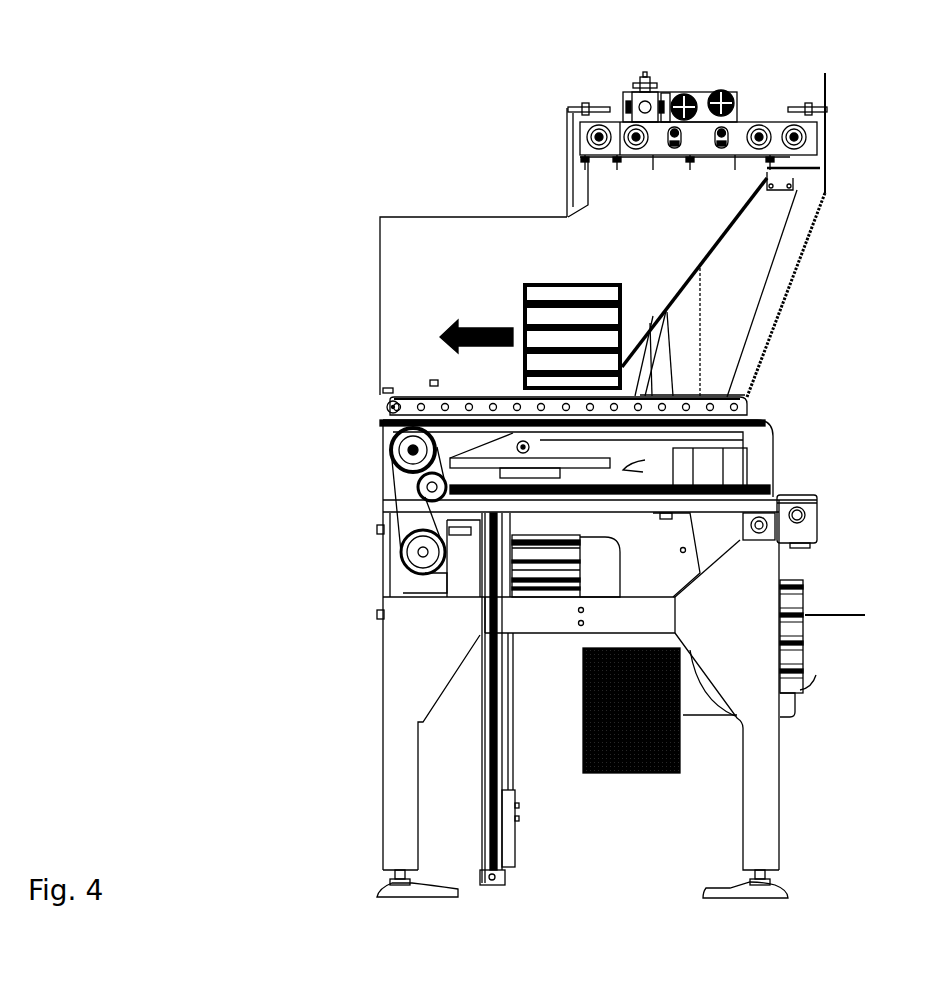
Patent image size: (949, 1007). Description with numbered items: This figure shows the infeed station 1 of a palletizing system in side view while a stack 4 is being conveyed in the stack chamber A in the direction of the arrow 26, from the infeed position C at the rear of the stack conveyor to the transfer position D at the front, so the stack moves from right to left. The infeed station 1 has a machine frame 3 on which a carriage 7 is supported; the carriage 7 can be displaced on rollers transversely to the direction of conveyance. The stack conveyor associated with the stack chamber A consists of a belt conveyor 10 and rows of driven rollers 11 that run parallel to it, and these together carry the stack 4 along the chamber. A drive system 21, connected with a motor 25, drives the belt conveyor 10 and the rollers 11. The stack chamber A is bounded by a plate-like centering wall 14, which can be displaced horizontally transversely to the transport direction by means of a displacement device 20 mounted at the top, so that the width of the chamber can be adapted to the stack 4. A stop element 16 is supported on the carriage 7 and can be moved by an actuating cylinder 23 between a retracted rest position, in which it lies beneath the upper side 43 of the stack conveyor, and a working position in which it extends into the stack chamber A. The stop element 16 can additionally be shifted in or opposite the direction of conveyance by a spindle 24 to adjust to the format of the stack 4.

The infeed station 1 is at (806, 303).
The machine frame 3 is at (782, 792).
The stack 4 is at (570, 300).
The carriage 7 is at (773, 463).
The belt conveyor 10 is at (733, 415).
The rollers 11 is at (385, 408).
The centering wall 14 is at (463, 245).
The stop element 16 is at (508, 718).
The displacement device 20 is at (737, 97).
The drive system 21 is at (413, 553).
The actuating cylinder 23 is at (507, 848).
The spindle 24 is at (788, 589).
The motor 25 is at (597, 568).
The arrow 26 is at (479, 329).
The upper side 43 is at (707, 396).
The stack chamber A is at (607, 255).
The infeed position C is at (733, 272).
The transfer position D is at (410, 360).